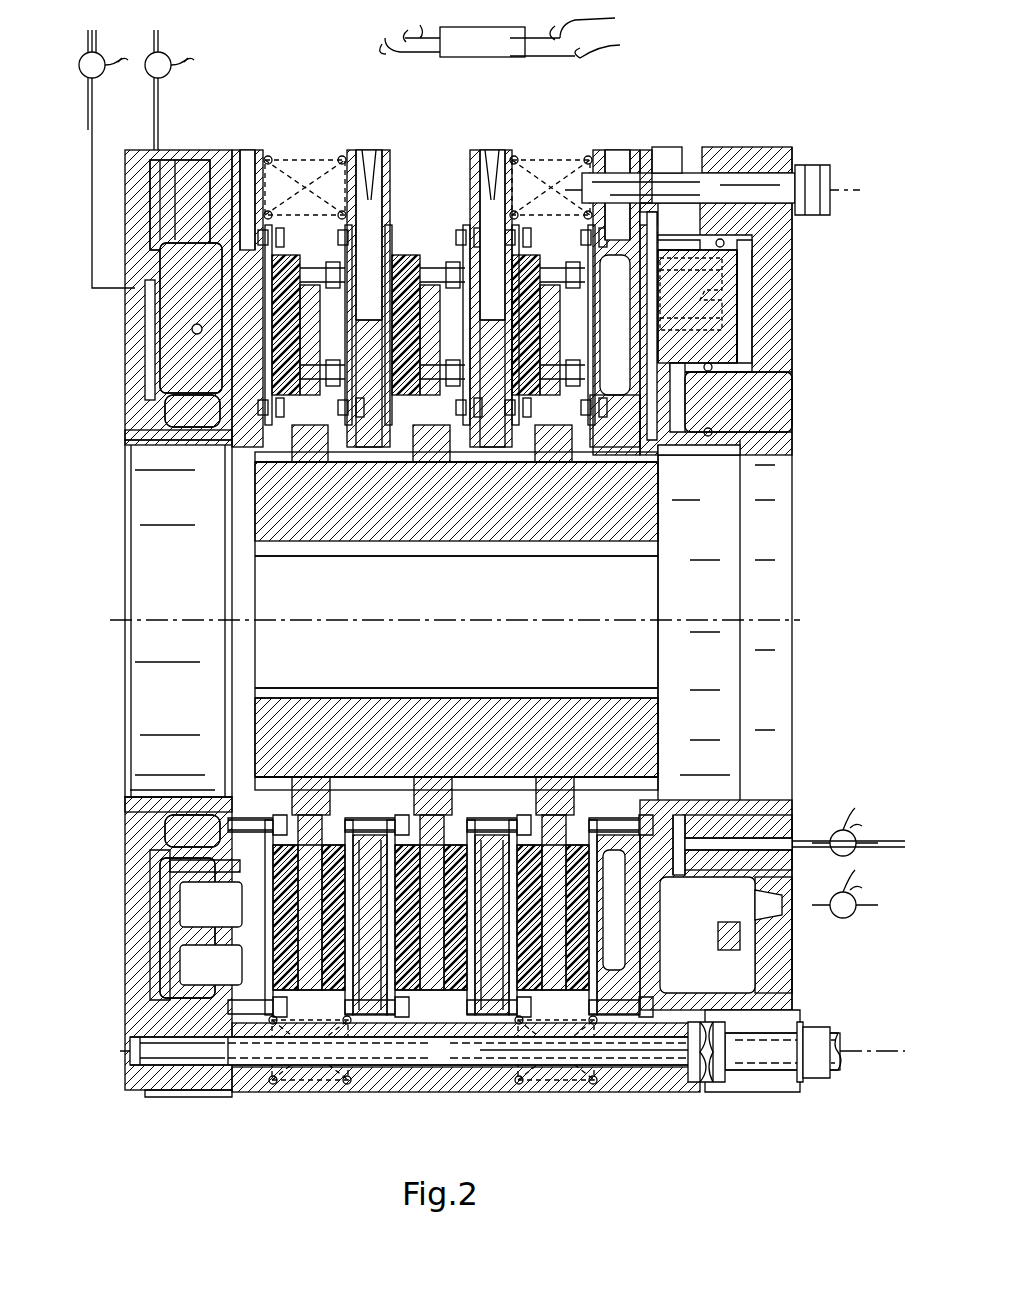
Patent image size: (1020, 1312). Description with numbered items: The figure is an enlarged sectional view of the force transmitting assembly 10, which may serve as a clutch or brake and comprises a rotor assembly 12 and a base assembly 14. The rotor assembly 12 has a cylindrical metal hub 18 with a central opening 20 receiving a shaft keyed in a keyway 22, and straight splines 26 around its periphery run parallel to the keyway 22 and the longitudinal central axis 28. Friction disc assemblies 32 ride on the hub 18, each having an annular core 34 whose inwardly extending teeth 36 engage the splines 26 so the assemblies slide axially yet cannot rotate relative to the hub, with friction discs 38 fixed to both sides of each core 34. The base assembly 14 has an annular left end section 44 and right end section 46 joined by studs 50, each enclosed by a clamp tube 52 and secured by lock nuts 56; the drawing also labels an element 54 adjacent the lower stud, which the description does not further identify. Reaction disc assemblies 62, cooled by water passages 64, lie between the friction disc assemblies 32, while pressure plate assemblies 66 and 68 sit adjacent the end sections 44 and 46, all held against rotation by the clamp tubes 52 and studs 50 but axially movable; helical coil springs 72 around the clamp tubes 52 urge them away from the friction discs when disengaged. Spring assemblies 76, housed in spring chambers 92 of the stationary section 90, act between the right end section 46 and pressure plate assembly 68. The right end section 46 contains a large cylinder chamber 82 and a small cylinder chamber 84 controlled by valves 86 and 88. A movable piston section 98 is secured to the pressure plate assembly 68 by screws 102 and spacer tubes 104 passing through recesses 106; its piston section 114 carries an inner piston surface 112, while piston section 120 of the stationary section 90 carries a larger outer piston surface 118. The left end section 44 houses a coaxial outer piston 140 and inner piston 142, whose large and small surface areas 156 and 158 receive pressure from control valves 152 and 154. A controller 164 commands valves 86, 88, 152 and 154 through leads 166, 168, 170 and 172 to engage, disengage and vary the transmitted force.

The force transmitting assembly 10 is at (762, 85).
The rotor assembly 12 is at (660, 518).
The base assembly 14 is at (795, 248).
The hub 18 is at (660, 722).
The central opening 20 is at (625, 700).
The keyway 22 is at (450, 560).
The splines 26 is at (648, 462).
The longitudinal central axis 28 is at (763, 620).
The friction disc assemblies 32 is at (290, 970).
The core 34 is at (322, 830).
The teeth 36 is at (310, 800).
The friction discs 38 is at (310, 985).
The left end section 44 is at (175, 1097).
The right end section 46 is at (778, 1092).
The studs 50 is at (835, 1062).
The clamp tube 52 is at (312, 130).
The shaft 54 is at (205, 1046).
The lock nuts 56 is at (715, 1082).
The reaction disc assemblies 62 is at (373, 148).
The passages 64 is at (380, 165).
The pressure plate assembly 66 is at (250, 148).
The pressure plate assembly 68 is at (620, 148).
The helical coil springs 72 is at (270, 148).
The spring assemblies 76 is at (705, 305).
The cylinder chamber 82 is at (757, 330).
The cylinder chamber 84 is at (715, 397).
The valve 86 is at (870, 877).
The valve 88 is at (870, 813).
The stationary section 90 is at (676, 148).
The spring chambers 92 is at (760, 280).
The piston section 98 is at (770, 147).
The screws 102 is at (770, 185).
The spacer tubes 104 is at (700, 147).
The recesses 106 is at (667, 148).
The radially inner piston surface 112 is at (700, 407).
The piston section 114 is at (765, 812).
The radially outer piston surface 118 is at (752, 335).
The piston section 120 is at (745, 305).
The outer piston 140 is at (185, 318).
The inner piston 142 is at (175, 410).
The control valve 152 is at (168, 58).
The control valve 154 is at (103, 56).
The annular surface area 156 is at (170, 912).
The annular surface area 158 is at (215, 868).
The controller 164 is at (503, 54).
The lead 166 is at (694, 476).
The lead 168 is at (694, 430).
The lead 170 is at (178, 62).
The lead 172 is at (108, 65).